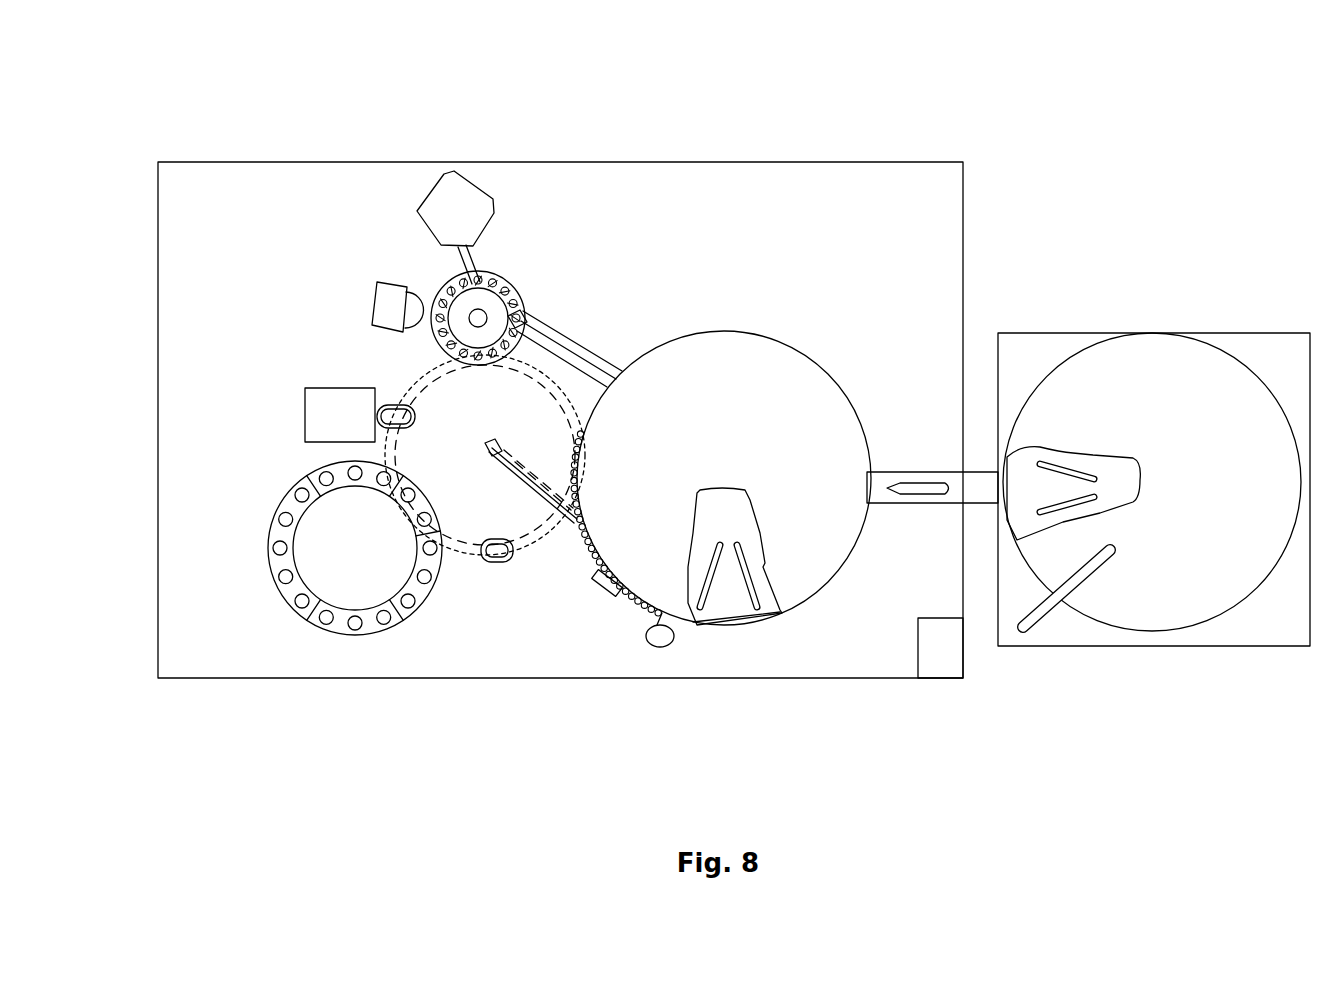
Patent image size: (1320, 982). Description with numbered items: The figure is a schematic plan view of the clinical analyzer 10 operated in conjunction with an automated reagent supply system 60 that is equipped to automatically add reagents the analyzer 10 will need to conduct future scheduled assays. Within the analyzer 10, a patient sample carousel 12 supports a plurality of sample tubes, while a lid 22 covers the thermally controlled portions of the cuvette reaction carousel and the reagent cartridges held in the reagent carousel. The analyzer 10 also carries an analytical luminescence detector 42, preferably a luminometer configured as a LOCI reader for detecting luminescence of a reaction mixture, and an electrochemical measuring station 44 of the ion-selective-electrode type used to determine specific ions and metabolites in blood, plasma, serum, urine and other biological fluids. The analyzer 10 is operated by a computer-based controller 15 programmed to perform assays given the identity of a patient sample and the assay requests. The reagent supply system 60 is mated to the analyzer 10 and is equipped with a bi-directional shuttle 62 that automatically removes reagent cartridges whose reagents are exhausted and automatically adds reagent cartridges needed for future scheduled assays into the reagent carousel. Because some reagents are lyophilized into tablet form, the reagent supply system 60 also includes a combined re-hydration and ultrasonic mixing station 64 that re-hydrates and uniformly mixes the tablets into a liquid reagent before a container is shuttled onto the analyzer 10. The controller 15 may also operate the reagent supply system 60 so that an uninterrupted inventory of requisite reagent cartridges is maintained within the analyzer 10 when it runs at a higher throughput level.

The automatic chemical analyzer 10 is at (492, 162).
The patient sample carousel 12 is at (341, 562).
The computer-based controller 15 is at (955, 658).
The lid 22 is at (715, 444).
The analytical luminescence detector 42 is at (441, 224).
The electrochemical measuring station 44 is at (326, 427).
The automated reagent supply system 60 is at (1045, 335).
The bi-directional shuttle 62 is at (955, 478).
The combined re-hydration and ultrasonic mixing station 64 is at (1095, 580).